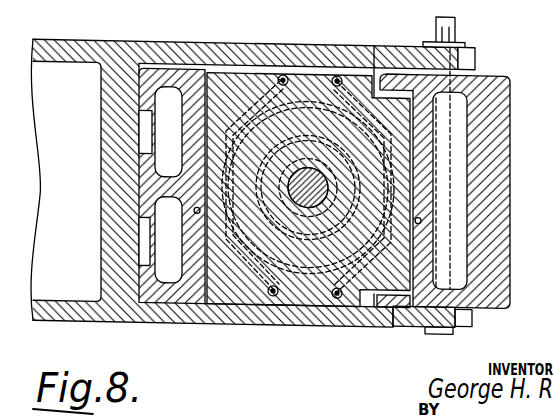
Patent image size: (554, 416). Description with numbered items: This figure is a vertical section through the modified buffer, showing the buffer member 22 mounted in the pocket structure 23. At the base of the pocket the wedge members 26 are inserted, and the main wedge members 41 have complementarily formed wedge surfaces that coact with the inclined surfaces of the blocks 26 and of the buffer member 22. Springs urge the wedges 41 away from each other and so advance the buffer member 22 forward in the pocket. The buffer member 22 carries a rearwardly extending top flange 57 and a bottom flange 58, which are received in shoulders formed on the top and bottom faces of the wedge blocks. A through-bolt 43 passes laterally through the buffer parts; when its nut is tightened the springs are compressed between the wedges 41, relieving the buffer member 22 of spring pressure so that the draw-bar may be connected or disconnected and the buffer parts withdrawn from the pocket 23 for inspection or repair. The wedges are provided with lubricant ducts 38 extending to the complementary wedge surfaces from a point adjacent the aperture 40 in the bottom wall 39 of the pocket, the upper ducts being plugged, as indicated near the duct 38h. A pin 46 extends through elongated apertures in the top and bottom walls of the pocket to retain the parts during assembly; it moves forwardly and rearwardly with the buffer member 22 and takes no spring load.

The buffer member 22 is at (481, 80).
The pocket structure 23 is at (226, 23).
The wedge members 26 is at (150, 72).
The lubricant ducts 38 is at (283, 75).
The bolt 38h is at (337, 75).
The bottom wall 39 is at (239, 313).
The aperture 40 is at (273, 293).
The main wedge members 41 is at (374, 44).
The through-bolt 43 is at (328, 188).
The pin 46 is at (455, 15).
The top flange 57 is at (396, 74).
The bottom flange 58 is at (393, 308).